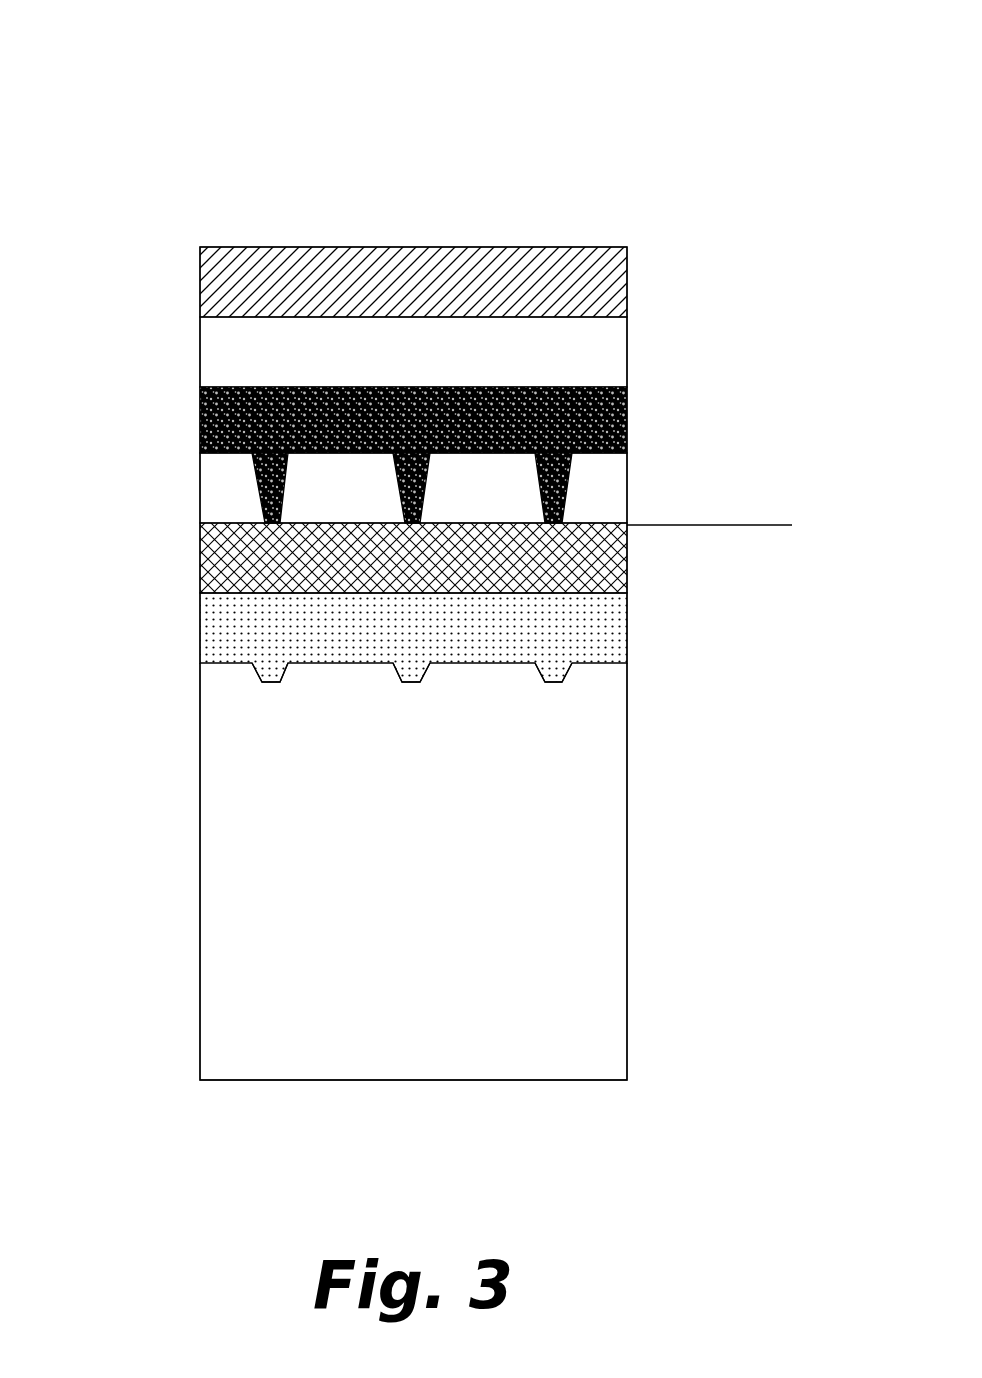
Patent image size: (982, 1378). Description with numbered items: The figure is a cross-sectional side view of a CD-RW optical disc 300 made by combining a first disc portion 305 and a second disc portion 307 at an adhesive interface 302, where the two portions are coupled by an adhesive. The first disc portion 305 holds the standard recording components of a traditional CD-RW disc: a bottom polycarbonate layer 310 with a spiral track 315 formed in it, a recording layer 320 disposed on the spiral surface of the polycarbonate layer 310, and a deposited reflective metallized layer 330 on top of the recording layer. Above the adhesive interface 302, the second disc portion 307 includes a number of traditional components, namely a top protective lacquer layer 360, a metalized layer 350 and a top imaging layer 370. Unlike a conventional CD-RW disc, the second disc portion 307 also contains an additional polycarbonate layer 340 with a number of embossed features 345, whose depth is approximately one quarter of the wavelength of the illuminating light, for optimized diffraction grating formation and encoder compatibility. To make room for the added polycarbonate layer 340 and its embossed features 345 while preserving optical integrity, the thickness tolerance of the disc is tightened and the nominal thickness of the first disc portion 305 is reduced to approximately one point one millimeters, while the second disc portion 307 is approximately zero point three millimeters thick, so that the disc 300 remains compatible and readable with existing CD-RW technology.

The CD-RW optical disc 300 is at (804, 147).
The adhesive interface 302 is at (741, 527).
The first disc portion 305 is at (180, 524).
The second disc portion 307 is at (180, 247).
The bottom polycarbonate layer 310 is at (627, 740).
The spiral track 315 is at (627, 664).
The recording layer 320 is at (627, 644).
The reflective metallized layer 330 is at (627, 567).
The polycarbonate layer 340 is at (627, 487).
The embossed features 345 is at (237, 456).
The metalized layer 350 is at (627, 418).
The top protective lacquer layer 360 is at (627, 358).
The top imaging layer 370 is at (627, 300).